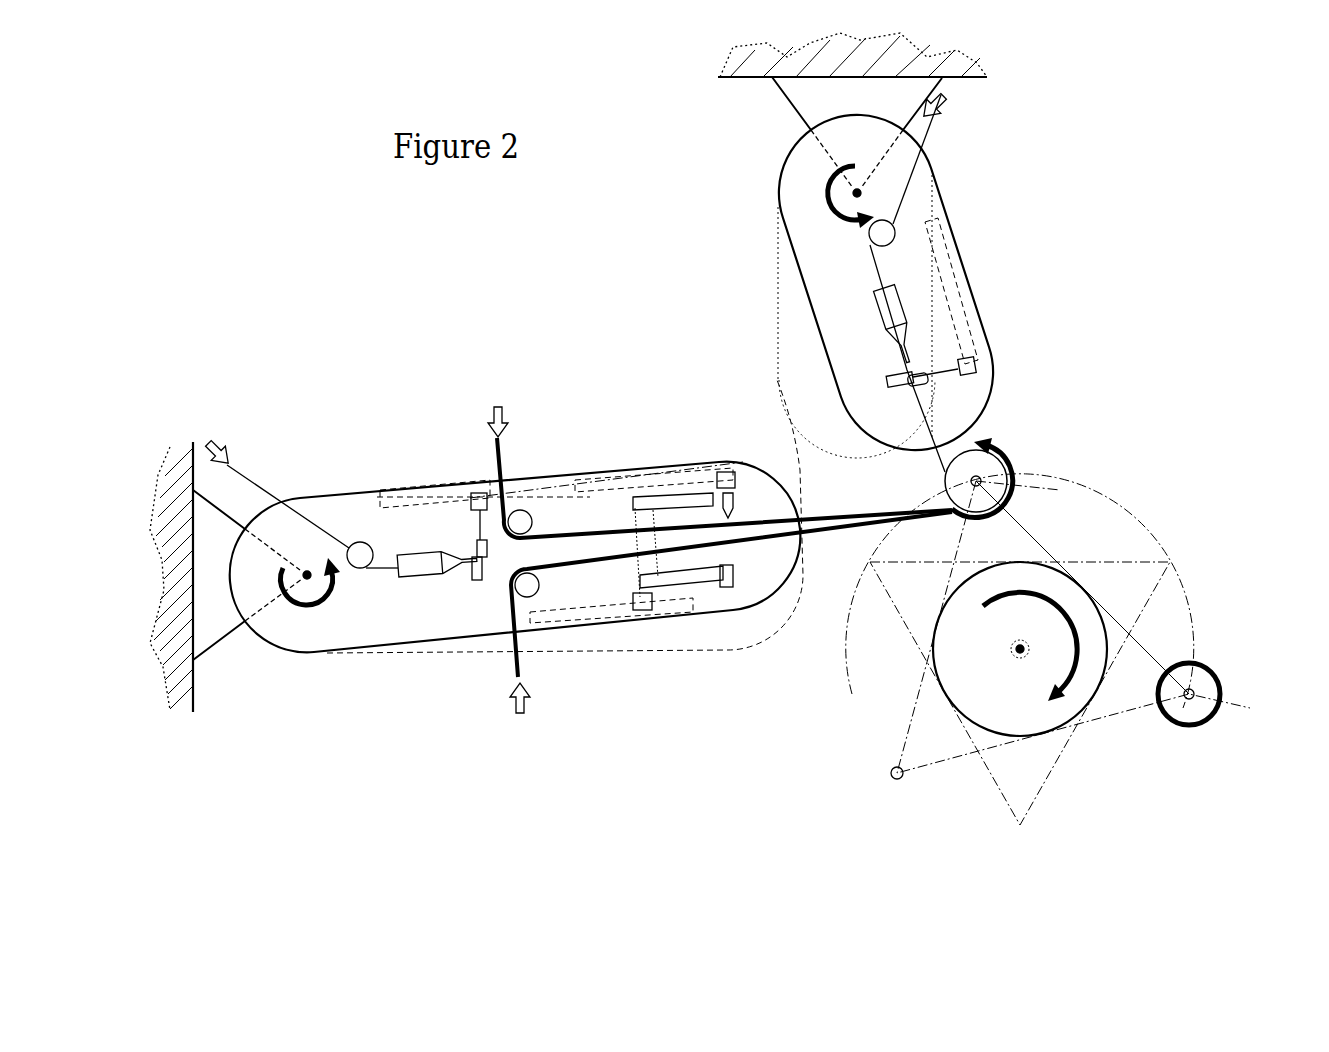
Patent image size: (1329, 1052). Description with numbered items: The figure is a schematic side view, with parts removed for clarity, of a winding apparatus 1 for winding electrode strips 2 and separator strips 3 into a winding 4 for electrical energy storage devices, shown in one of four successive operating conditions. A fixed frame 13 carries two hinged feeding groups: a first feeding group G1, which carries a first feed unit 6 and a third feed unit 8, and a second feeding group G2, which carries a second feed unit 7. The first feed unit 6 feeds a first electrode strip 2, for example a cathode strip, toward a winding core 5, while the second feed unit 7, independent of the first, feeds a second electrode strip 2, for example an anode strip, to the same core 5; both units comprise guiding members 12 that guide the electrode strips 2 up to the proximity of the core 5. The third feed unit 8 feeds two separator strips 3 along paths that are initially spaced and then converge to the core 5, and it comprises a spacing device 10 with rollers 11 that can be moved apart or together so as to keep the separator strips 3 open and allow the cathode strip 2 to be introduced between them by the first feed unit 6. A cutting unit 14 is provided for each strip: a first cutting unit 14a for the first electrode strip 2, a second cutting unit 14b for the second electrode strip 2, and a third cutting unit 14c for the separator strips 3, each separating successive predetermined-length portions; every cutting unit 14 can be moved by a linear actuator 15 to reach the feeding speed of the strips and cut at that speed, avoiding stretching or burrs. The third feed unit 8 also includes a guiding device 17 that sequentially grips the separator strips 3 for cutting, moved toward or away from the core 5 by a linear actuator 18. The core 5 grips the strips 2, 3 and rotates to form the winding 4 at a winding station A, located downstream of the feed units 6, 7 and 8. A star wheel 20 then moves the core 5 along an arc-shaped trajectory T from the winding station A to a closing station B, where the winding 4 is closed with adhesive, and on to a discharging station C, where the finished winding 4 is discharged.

The winding apparatus 1 is at (350, 292).
The electrode strip 2 is at (255, 480).
The separator strip 3 is at (497, 442).
The winding 4 is at (952, 510).
The winding core 5 is at (1032, 486).
The first feed unit 6 is at (356, 630).
The second feed unit 7 is at (818, 270).
The third feed unit 8 is at (535, 480).
The spacing device 10 is at (540, 612).
The rollers 11 is at (531, 522).
The guiding members 12 is at (436, 580).
The fixed frame 13 is at (190, 455).
The cutting unit 14 is at (743, 498).
The first cutting unit 14a is at (478, 490).
The second cutting unit 14b is at (985, 378).
The third cutting unit 14c is at (722, 468).
The linear actuator 15 is at (432, 482).
The guiding device 17 is at (712, 595).
The linear actuator 18 is at (620, 625).
The star wheel 20 is at (1072, 717).
The first feeding group G1 is at (351, 683).
The second feeding group G2 is at (748, 170).
The winding station A is at (1045, 449).
The closing station B is at (1245, 656).
The discharging station C is at (918, 782).
The trajectory T is at (1020, 591).